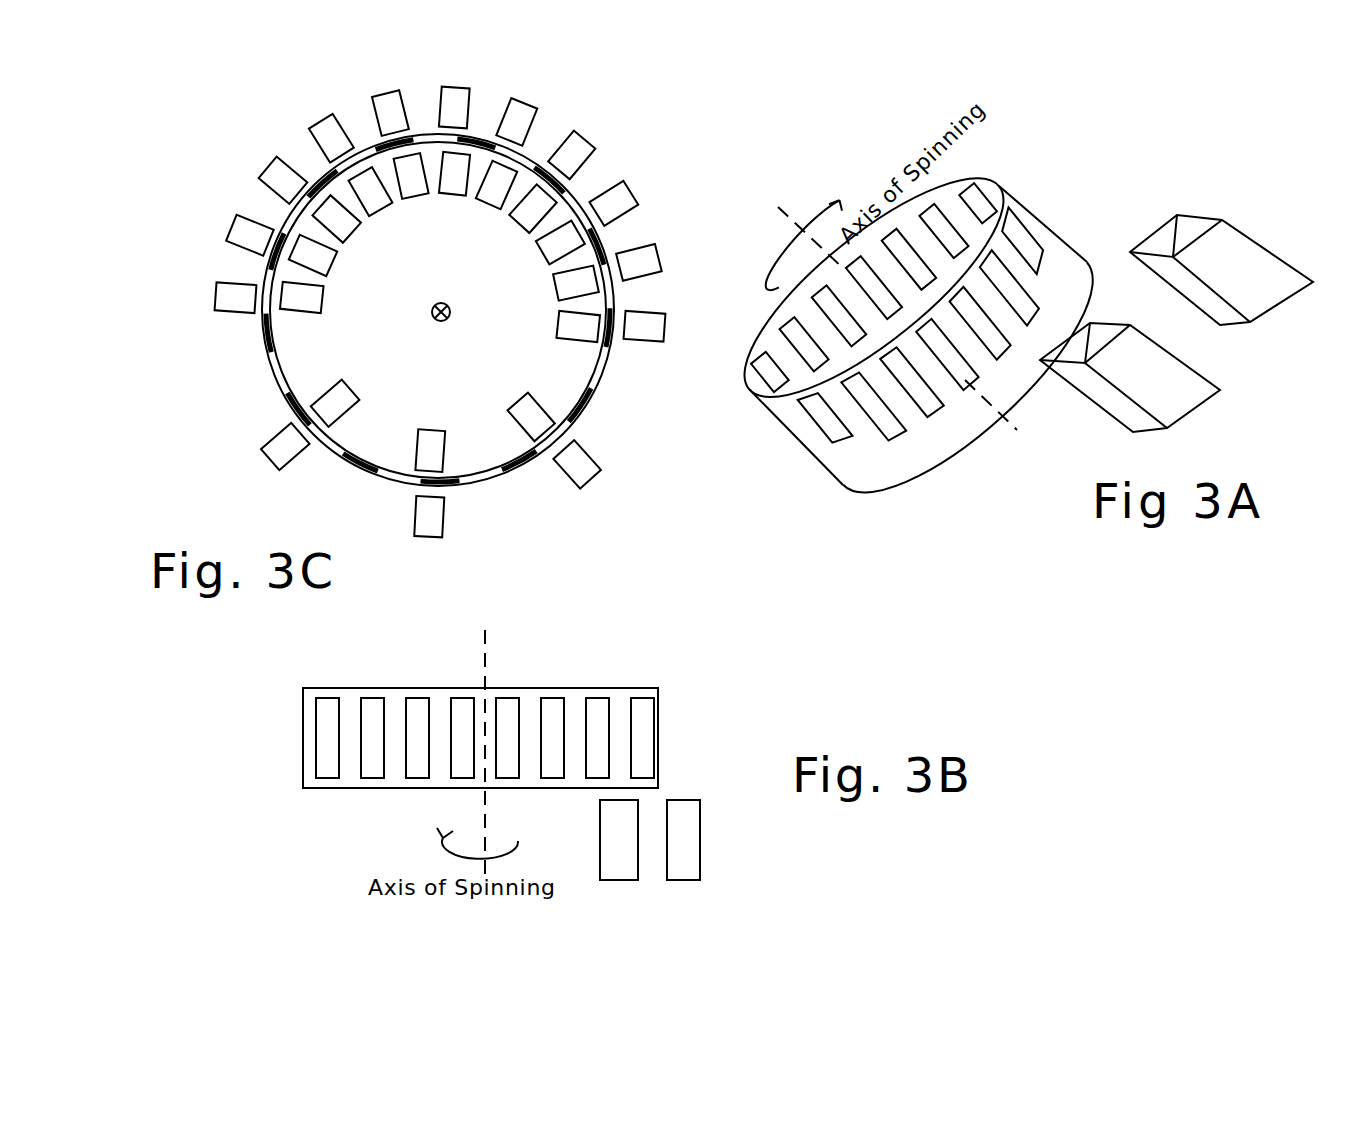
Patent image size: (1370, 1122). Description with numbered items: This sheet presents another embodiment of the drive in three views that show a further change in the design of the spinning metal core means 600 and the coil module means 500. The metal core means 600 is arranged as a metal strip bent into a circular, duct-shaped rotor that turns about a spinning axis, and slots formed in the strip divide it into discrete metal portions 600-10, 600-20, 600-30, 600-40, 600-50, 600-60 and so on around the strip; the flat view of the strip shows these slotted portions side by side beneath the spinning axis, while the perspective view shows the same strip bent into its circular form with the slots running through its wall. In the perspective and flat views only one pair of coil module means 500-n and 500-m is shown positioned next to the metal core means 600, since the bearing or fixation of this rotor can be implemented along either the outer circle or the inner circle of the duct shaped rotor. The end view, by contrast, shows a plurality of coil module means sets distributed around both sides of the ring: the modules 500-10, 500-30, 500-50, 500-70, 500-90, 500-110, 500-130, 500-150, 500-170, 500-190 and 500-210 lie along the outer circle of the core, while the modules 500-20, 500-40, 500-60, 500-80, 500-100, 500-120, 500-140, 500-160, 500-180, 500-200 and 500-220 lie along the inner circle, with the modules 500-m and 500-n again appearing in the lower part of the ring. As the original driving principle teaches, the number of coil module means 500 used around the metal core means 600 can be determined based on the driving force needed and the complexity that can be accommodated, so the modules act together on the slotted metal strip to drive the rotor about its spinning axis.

In FIG. 3C, the coil module means 500 is at (658, 292).
In FIG. 3A, the coil module means 500 is at (1197, 323).
In FIG. 3B, the coil module means 500 is at (630, 823).
In FIG. 3C, the metal core means 600 is at (283, 398).
In FIG. 3A, the metal core means 600 is at (748, 505).
In FIG. 3B, the metal core means 600 is at (657, 688).
In FIG. 3C, the coil module means 500-10 is at (230, 297).
In FIG. 3C, the coil module means 500-20 is at (295, 302).
In FIG. 3C, the coil module means 500-30 is at (245, 233).
In FIG. 3C, the coil module means 500-40 is at (318, 262).
In FIG. 3C, the coil module means 500-50 is at (277, 177).
In FIG. 3C, the coil module means 500-60 is at (340, 228).
In FIG. 3C, the coil module means 500-70 is at (325, 137).
In FIG. 3C, the coil module means 500-80 is at (371, 200).
In FIG. 3C, the coil module means 500-90 is at (397, 102).
In FIG. 3C, the coil module means 500-100 is at (408, 185).
In FIG. 3C, the coil module means 500-110 is at (452, 102).
In FIG. 3C, the coil module means 500-120 is at (452, 180).
In FIG. 3C, the coil module means 500-130 is at (638, 143).
In FIG. 3C, the coil module means 500-140 is at (492, 188).
In FIG. 3C, the coil module means 500-150 is at (575, 148).
In FIG. 3C, the coil module means 500-160 is at (531, 213).
In FIG. 3C, the coil module means 500-170 is at (630, 178).
In FIG. 3C, the coil module means 500-180 is at (558, 247).
In FIG. 3C, the coil module means 500-190 is at (648, 253).
In FIG. 3C, the coil module means 500-200 is at (573, 287).
In FIG. 3C, the coil module means 500-210 is at (652, 320).
In FIG. 3C, the coil module means 500-220 is at (573, 338).
In FIG. 3C, the coil module means 500-m is at (427, 453).
In FIG. 3A, the coil module means 500-m is at (1187, 389).
In FIG. 3B, the coil module means 500-m is at (618, 840).
In FIG. 3C, the coil module means 500-n is at (420, 502).
In FIG. 3A, the coil module means 500-n is at (1237, 260).
In FIG. 3B, the coil module means 500-n is at (695, 840).
In FIG. 3B, the discrete metal portion 600-10 is at (575, 738).
In FIG. 3B, the discrete metal portion 600-20 is at (532, 738).
In FIG. 3B, the discrete metal portion 600-30 is at (490, 728).
In FIG. 3B, the discrete metal portion 600-40 is at (442, 738).
In FIG. 3B, the discrete metal portion 600-50 is at (400, 738).
In FIG. 3B, the discrete metal portion 600-60 is at (353, 743).